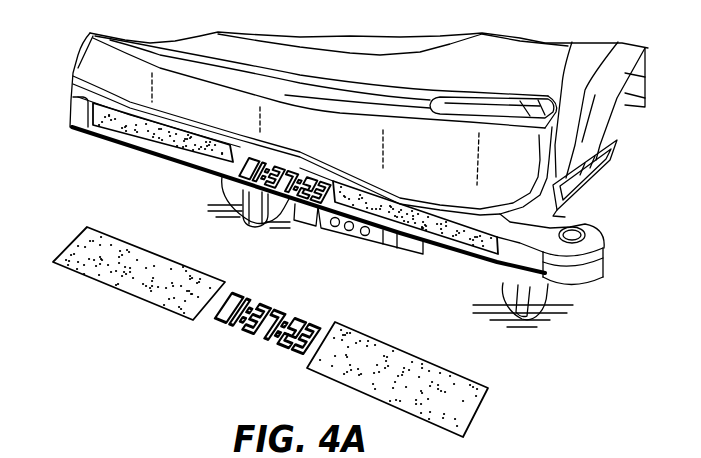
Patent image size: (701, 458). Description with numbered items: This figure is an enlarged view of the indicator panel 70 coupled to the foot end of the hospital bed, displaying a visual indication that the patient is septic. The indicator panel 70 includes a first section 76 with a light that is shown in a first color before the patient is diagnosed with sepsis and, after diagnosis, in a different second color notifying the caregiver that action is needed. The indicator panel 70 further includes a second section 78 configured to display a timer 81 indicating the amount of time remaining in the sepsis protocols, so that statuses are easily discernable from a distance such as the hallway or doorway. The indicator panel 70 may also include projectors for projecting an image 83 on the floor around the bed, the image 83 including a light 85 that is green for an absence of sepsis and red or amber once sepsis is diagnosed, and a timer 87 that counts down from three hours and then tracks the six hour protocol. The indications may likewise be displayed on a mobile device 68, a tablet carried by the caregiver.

The mobile device 68 is at (562, 457).
The indicator panel 70 is at (620, 228).
The first section 76 is at (158, 167).
The second section 78 is at (311, 238).
The timer 81 is at (290, 202).
The image 83 is at (211, 354).
The light 85 is at (123, 287).
The timer 87 is at (247, 352).